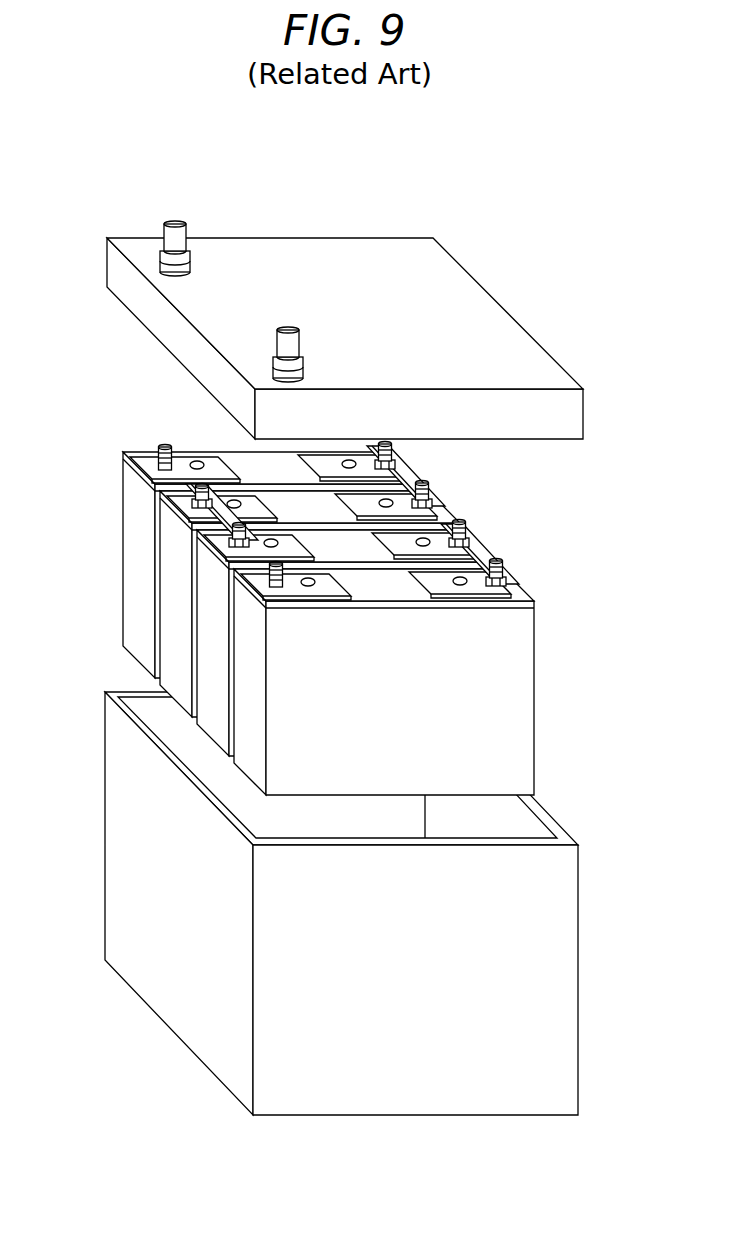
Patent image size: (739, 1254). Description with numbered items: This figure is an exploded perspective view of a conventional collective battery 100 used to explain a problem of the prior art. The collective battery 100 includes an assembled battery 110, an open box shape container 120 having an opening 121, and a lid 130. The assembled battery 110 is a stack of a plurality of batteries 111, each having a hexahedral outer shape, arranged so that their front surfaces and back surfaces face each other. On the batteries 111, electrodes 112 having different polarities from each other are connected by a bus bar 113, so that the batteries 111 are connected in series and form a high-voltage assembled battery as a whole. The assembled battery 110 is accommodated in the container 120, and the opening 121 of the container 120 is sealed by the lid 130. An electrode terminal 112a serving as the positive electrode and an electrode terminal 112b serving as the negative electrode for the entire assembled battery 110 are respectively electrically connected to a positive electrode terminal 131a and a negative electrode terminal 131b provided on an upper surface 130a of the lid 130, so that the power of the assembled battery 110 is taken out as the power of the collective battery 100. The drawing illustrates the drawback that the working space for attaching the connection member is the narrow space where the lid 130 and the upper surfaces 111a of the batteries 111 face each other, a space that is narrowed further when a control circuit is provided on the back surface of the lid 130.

The collective battery 100 is at (550, 126).
The assembled battery 110 is at (562, 652).
The battery 111 is at (517, 757).
The upper surface 111a is at (413, 600).
The electrode 112 is at (506, 568).
The electrode terminal 112a is at (296, 598).
The electrode terminal 112b is at (165, 448).
The bus bar 113 is at (480, 547).
The container 120 is at (594, 913).
The opening 121 is at (530, 828).
The lid 130 is at (478, 249).
The upper surface 130a is at (333, 247).
The positive electrode terminal 131a is at (289, 330).
The negative electrode terminal 131b is at (176, 222).